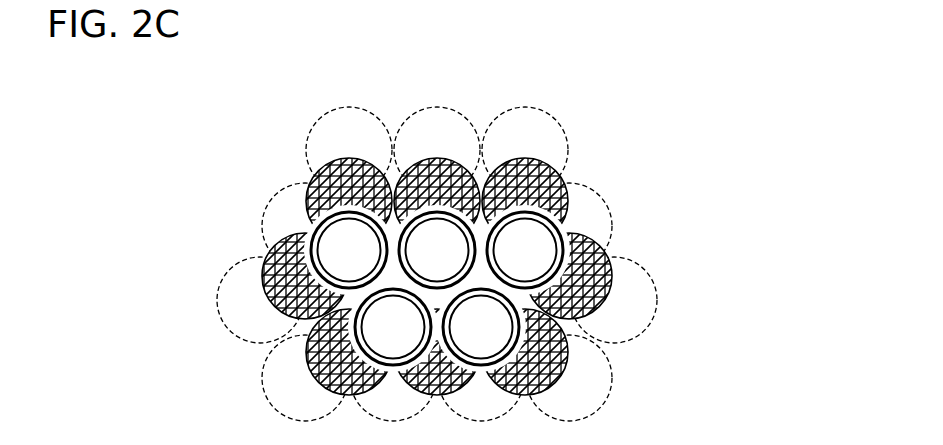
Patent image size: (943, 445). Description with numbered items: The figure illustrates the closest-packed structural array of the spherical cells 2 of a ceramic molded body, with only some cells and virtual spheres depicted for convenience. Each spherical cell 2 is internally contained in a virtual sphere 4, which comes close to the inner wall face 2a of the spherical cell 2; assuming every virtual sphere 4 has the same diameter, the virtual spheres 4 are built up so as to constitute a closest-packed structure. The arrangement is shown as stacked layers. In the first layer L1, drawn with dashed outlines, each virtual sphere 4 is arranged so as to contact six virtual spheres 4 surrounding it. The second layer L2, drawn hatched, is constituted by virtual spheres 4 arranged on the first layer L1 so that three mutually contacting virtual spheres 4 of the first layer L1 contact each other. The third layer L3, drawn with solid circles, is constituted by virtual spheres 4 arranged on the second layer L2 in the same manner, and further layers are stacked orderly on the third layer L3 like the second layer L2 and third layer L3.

The spherical cell 2 is at (407, 211).
The inner wall face 2a is at (319, 235).
The virtual sphere 4 is at (278, 250).
The first layer L1 is at (576, 123).
The second layer L2 is at (473, 276).
The third layer L3 is at (522, 215).